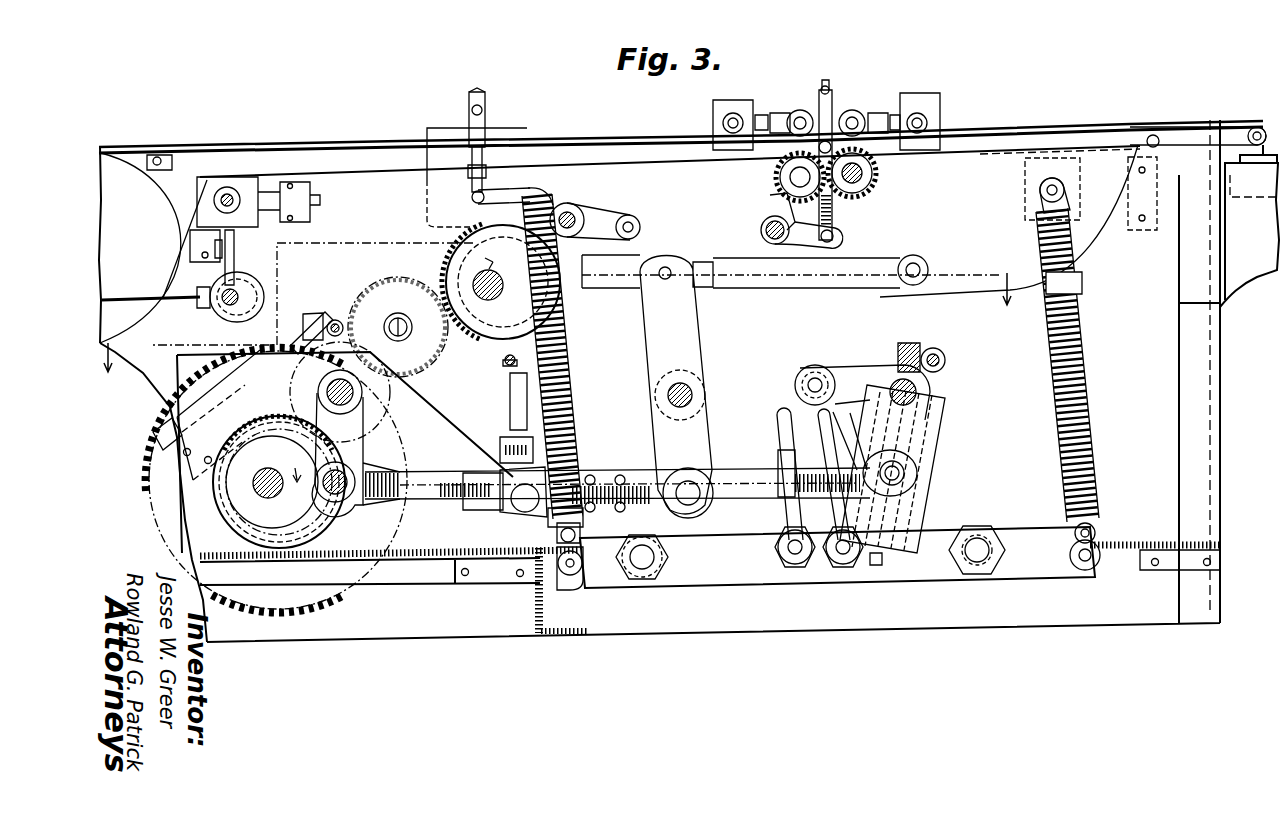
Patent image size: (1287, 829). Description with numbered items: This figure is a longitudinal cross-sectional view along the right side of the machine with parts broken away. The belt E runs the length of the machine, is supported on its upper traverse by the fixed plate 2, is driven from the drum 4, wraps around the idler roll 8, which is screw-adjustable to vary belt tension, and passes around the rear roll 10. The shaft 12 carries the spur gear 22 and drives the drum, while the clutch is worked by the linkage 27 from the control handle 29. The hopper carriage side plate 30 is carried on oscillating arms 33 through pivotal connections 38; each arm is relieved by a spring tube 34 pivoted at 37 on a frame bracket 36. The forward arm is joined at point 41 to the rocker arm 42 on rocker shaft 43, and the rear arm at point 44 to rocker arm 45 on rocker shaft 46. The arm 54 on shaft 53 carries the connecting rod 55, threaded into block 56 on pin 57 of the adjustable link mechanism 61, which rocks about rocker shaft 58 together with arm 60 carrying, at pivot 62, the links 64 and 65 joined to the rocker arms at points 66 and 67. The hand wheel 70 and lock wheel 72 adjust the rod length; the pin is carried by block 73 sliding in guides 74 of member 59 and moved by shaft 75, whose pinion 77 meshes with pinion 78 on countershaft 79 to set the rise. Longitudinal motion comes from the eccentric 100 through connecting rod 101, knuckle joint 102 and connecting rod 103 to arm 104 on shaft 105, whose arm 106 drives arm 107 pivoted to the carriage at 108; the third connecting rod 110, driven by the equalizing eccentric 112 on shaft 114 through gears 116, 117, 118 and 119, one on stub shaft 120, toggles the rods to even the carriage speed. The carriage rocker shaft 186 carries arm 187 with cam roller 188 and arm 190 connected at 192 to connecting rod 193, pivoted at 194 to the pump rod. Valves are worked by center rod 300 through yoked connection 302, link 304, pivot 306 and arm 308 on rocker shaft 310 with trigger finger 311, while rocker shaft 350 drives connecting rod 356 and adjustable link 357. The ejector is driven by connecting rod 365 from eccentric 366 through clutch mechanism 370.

The belt E is at (115, 150).
The fixed plate 2 is at (192, 165).
The drum 4 is at (150, 215).
The idler roll 8 is at (252, 222).
The roll 10 is at (1259, 127).
The shaft 12 is at (262, 492).
The spur gear 22 is at (335, 605).
The linkage 27 is at (295, 327).
The control handle 29 is at (330, 312).
The side plate 30 is at (520, 140).
The oscillating arm 33 is at (1068, 200).
The tube 34 is at (568, 380).
The bracket 36 is at (520, 548).
The pivot 37 is at (1095, 530).
The pivotal connection 38 is at (1040, 190).
The pivot point 41 is at (573, 572).
The rocker arm 42 is at (708, 570).
The rocker shaft 43 is at (641, 570).
The pivot point 44 is at (1095, 568).
The rocker arm 45 is at (1032, 570).
The rocker shaft 46 is at (972, 565).
The shaft 53 is at (339, 426).
The arm 54 is at (360, 448).
The connecting rod 55 is at (757, 480).
The block 56 is at (915, 505).
The pin 57 is at (915, 462).
The rocker shaft 58 is at (918, 392).
The member 59 is at (920, 484).
The arm 60 is at (862, 366).
The adjustable link mechanism 61 is at (948, 410).
The pivotal connection 62 is at (803, 378).
The link 64 is at (780, 412).
The link 65 is at (782, 395).
The pivot point 66 is at (795, 565).
The pivot point 67 is at (844, 565).
The hand wheel 70 is at (778, 462).
The lock wheel 72 is at (843, 410).
The block 73 is at (920, 440).
The guides 74 is at (905, 470).
The shaft 75 is at (877, 566).
The pinion 77 is at (903, 343).
The pinion 78 is at (940, 348).
The countershaft 79 is at (945, 365).
The eccentric 100 is at (258, 445).
The connecting rod 101 is at (425, 500).
The knuckle joint 102 is at (490, 512).
The connecting rod 103 is at (612, 505).
The arm 104 is at (705, 425).
The shaft 105 is at (685, 382).
The arm 106 is at (700, 330).
The arm 107 is at (832, 290).
The pivot 108 is at (920, 260).
The third connecting rod 110 is at (508, 391).
The equalizing eccentric 112 is at (450, 232).
The shaft 114 is at (486, 300).
The gear 116 is at (440, 268).
The gear 117 is at (385, 280).
The gear 118 is at (380, 402).
The gear 119 is at (263, 427).
The stub shaft 120 is at (405, 340).
The rocker shaft 186 is at (605, 208).
The arm 187 is at (625, 214).
The cam roller 188 is at (638, 220).
The arm 190 is at (567, 203).
The pivot 192 is at (471, 197).
The connecting rod 193 is at (468, 128).
The pivot 194 is at (486, 112).
The center rod 300 is at (815, 100).
The yoked pivotal connection 302 is at (832, 105).
The link 304 is at (834, 200).
The pivot 306 is at (835, 232).
The arm 308 is at (836, 245).
The rocker shaft 310 is at (762, 228).
The trigger finger 311 is at (772, 204).
The rocker shaft 350 is at (875, 182).
The connecting rod 356 is at (870, 115).
The adjustable link 357 is at (940, 108).
The connecting rod 365 is at (175, 305).
The eccentric 366 is at (232, 320).
The clutch mechanism 370 is at (236, 262).